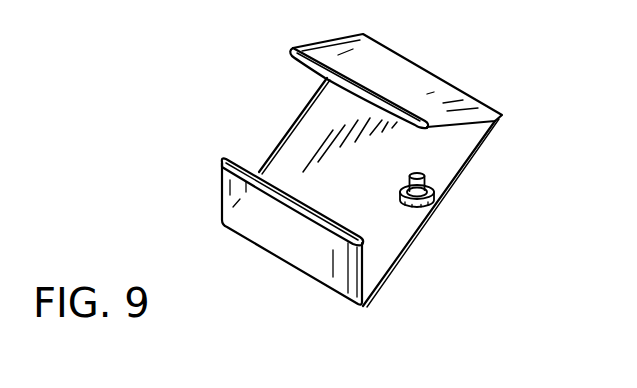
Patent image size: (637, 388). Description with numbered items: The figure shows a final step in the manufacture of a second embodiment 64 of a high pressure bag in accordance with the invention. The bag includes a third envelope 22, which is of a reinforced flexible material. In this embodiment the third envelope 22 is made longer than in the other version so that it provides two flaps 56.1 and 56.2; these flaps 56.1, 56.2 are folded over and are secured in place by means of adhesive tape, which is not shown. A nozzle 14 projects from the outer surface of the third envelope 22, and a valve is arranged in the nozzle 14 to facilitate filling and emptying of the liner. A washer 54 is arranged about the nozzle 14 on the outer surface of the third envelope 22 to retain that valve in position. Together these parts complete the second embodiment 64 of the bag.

The second embodiment 64 is at (262, 103).
The third envelope 22 is at (405, 253).
The flap 56.1 is at (402, 83).
The flap 56.2 is at (272, 218).
The washer 54 is at (425, 218).
The nozzle 14 is at (424, 180).